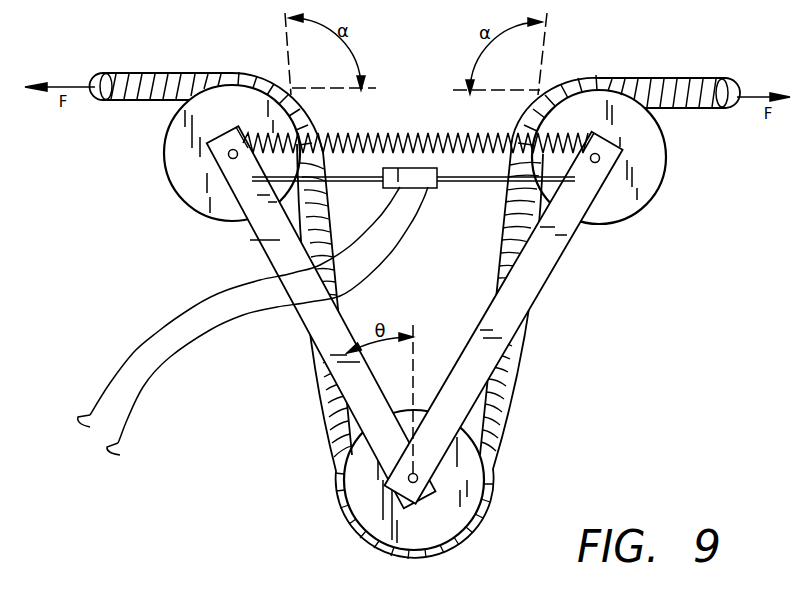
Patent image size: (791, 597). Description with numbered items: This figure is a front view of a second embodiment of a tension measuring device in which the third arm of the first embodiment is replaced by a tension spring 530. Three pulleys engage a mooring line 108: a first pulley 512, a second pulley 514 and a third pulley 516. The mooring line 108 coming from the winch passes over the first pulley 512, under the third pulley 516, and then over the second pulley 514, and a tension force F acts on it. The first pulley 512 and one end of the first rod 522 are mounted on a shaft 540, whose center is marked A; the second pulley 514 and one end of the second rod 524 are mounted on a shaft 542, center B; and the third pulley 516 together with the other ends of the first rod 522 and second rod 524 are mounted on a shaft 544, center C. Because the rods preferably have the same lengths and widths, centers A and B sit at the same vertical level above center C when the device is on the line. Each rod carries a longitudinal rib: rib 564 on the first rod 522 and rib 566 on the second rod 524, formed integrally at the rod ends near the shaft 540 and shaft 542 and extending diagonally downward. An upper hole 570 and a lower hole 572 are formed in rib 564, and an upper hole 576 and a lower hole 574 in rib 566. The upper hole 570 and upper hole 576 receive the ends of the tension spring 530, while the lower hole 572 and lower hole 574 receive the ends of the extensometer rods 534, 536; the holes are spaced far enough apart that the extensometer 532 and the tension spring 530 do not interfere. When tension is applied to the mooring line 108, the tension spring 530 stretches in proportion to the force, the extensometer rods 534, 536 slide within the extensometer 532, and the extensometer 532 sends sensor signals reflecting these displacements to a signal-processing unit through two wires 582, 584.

The mooring line 108 is at (687, 78).
The first pulley 512 is at (172, 114).
The second pulley 514 is at (648, 143).
The third pulley 516 is at (373, 504).
The first rod 522 is at (277, 237).
The second rod 524 is at (513, 293).
The tension spring 530 is at (428, 132).
The extensometer 532 is at (423, 189).
The extensometer rod 534 is at (448, 183).
The extensometer rod 536 is at (334, 181).
The shaft 540 is at (229, 155).
The shaft 542 is at (600, 160).
The shaft 544 is at (418, 478).
The longitudinal rib 564 is at (232, 80).
The longitudinal rib 566 is at (620, 81).
The upper hole 570 is at (245, 131).
The lower hole 572 is at (252, 192).
The lower hole 574 is at (582, 187).
The upper hole 576 is at (582, 133).
The wire 582 is at (135, 353).
The wire 584 is at (136, 398).